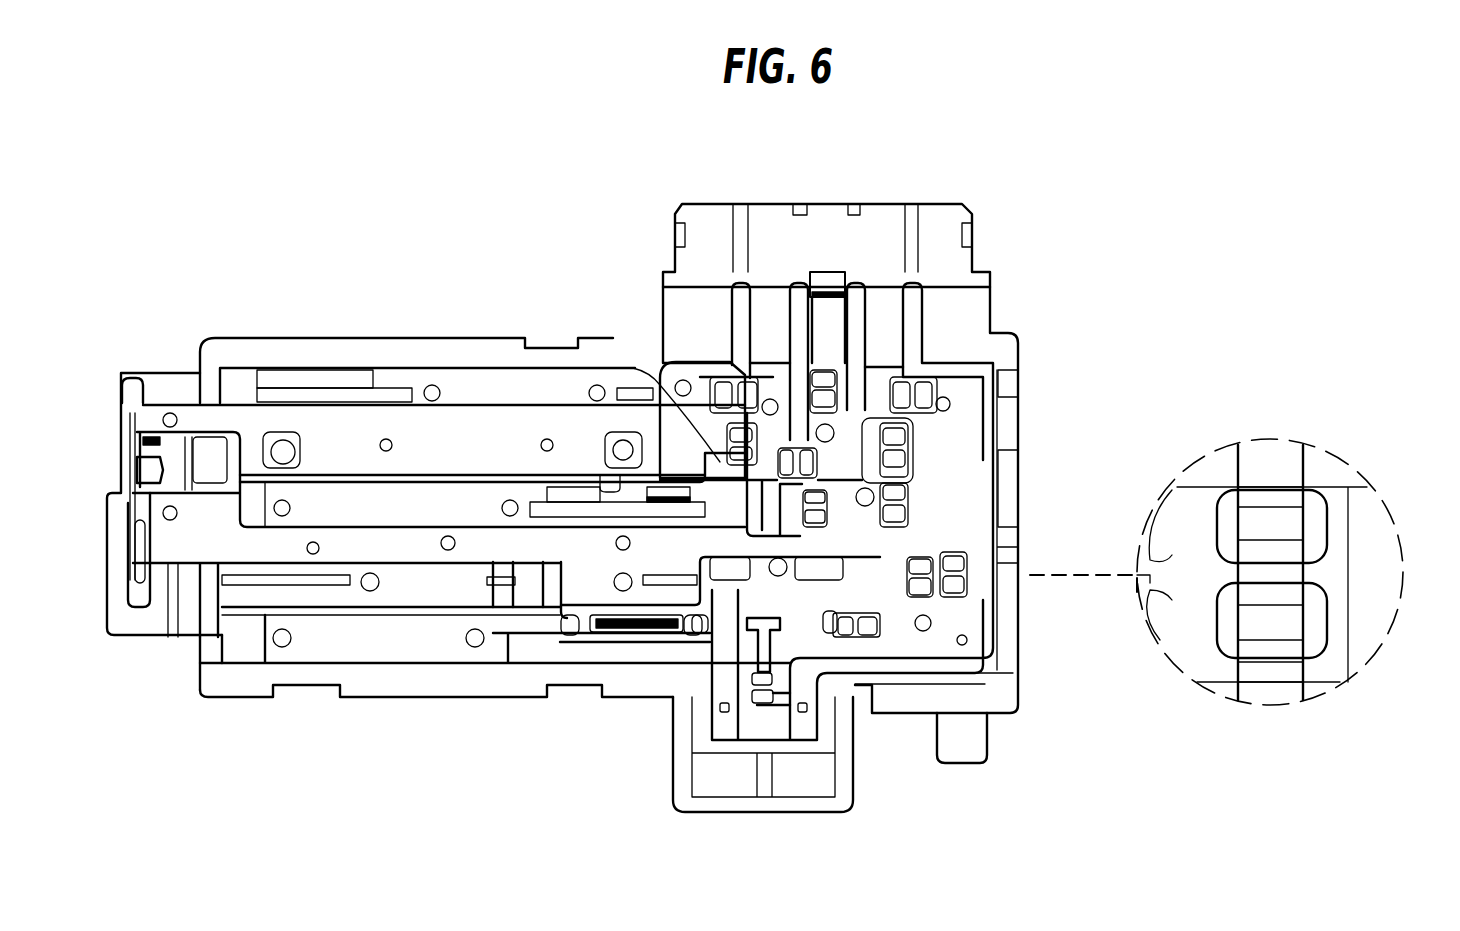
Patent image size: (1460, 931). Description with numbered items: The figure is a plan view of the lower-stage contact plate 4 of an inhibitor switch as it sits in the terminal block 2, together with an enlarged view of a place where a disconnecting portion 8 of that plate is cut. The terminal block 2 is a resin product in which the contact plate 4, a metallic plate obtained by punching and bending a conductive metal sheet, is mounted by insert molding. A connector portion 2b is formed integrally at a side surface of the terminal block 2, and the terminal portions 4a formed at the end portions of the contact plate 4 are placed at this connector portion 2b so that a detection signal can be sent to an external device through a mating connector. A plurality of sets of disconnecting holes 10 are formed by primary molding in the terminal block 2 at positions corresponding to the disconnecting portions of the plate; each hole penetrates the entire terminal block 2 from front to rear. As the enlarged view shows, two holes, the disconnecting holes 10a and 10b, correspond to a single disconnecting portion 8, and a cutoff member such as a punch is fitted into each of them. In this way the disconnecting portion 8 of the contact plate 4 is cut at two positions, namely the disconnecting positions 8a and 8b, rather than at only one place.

The terminal block 2 is at (415, 350).
The connector portion 2b is at (985, 265).
The contact plate 4 is at (497, 440).
The terminal portion 4a is at (910, 283).
The disconnecting portion 8 is at (1253, 700).
The disconnecting position 8a is at (1228, 512).
The disconnecting position 8b is at (1230, 635).
The disconnecting holes 10 is at (780, 460).
The disconnecting hole 10a is at (1315, 520).
The disconnecting hole 10b is at (1315, 620).